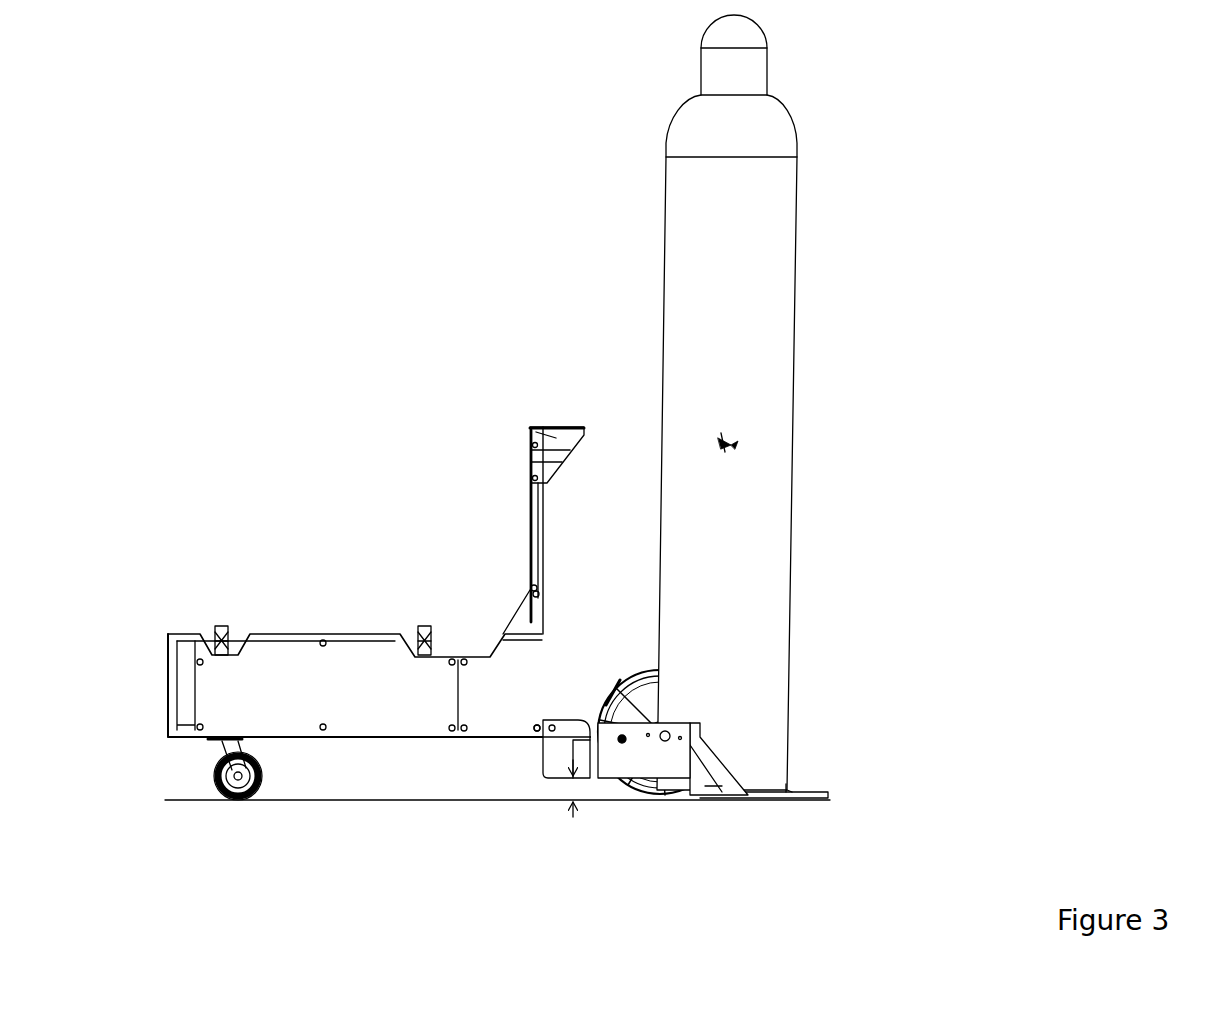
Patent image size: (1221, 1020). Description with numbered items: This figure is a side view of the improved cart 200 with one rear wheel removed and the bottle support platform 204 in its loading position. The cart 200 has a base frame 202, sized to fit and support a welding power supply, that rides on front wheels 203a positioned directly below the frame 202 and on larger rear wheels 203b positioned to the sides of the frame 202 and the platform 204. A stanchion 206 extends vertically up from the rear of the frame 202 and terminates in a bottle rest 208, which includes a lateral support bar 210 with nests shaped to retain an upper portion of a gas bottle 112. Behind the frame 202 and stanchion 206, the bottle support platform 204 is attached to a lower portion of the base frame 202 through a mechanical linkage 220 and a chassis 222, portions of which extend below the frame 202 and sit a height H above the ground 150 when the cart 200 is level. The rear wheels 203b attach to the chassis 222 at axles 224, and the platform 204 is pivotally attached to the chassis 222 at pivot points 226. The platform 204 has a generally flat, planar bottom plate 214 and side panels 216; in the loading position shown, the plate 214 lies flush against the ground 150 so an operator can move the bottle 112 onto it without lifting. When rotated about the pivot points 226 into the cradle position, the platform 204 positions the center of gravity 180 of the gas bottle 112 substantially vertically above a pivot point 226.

The improved cart 200 is at (445, 605).
The base frame 202 is at (293, 665).
The front wheels 203a is at (221, 790).
The rear wheels 203b is at (627, 684).
The bottle support platform 204 is at (677, 813).
The stanchion 206 is at (530, 543).
The bottle rest 208 is at (518, 445).
The lateral support bar 210 is at (528, 432).
The gas bottle 112 is at (742, 360).
The center of gravity 180 is at (715, 446).
The ground 150 is at (375, 801).
The bottom plate 214 is at (770, 801).
The side panels 216 is at (740, 795).
The mechanical linkage 220 is at (545, 763).
The chassis 222 is at (637, 812).
The axles 224 is at (667, 752).
The pivot points 226 is at (623, 762).